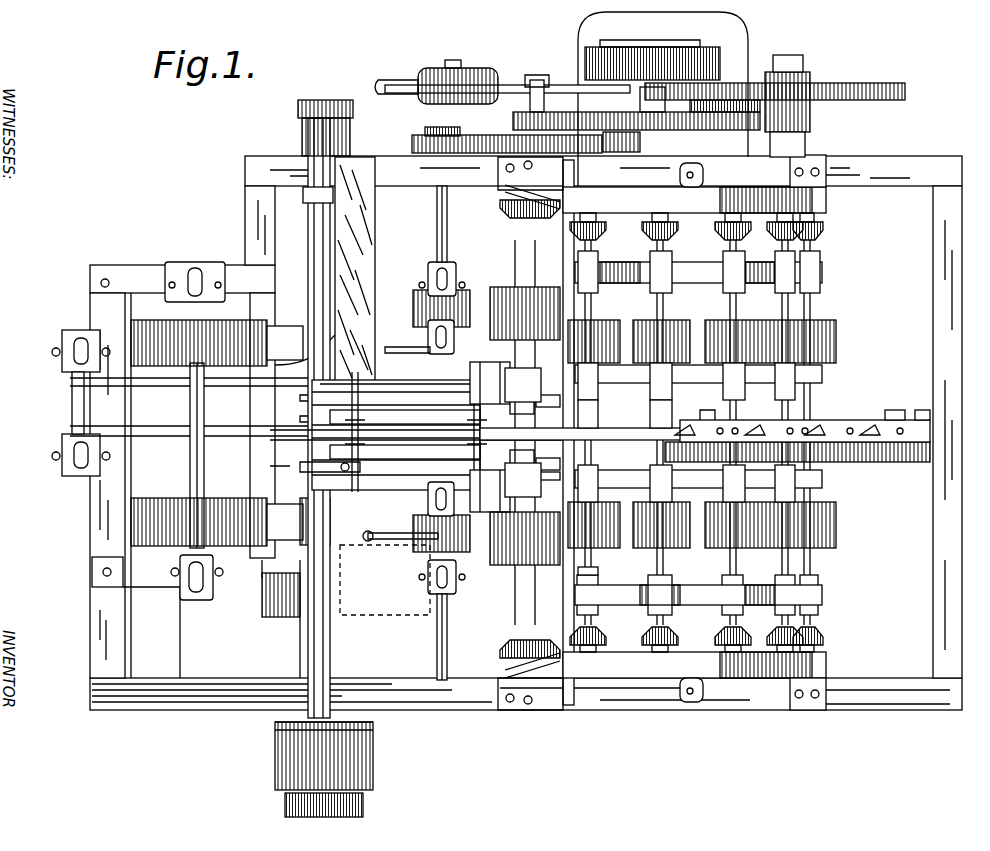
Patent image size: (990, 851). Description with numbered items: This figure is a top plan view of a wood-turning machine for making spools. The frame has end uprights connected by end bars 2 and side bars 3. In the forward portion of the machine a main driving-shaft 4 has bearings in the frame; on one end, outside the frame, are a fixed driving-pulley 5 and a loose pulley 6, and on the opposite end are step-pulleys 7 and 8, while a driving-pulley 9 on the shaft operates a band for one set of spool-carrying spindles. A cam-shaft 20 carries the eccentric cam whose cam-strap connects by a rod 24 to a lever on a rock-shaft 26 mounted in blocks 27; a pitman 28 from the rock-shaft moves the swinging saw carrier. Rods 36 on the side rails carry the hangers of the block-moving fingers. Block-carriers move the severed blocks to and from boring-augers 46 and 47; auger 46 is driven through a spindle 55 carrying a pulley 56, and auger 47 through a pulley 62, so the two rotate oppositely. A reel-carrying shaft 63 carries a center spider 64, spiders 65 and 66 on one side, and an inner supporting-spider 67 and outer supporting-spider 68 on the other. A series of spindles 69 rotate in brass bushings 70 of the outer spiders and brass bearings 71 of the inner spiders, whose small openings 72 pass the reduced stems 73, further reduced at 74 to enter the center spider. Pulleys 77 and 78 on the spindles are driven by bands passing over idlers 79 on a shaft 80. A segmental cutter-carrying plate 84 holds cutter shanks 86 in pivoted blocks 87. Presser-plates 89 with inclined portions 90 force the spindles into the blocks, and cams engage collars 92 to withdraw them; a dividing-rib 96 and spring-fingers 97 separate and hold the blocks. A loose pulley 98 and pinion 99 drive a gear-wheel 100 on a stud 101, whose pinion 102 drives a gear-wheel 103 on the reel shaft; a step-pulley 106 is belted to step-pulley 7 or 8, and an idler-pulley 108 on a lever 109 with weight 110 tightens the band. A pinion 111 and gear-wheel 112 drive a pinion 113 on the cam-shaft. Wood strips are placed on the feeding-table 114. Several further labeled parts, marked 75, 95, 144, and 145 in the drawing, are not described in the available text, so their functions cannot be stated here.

The end bars 2 is at (935, 598).
The side bars 3 is at (880, 170).
The main driving-shaft 4 is at (325, 268).
The fixed driving-pulley 5 is at (375, 752).
The loose pulley 6 is at (333, 805).
The step-pulley 7 is at (297, 133).
The step-pulley 8 is at (295, 108).
The driving-pulley 9 is at (305, 350).
The cam-shaft 20 is at (438, 230).
The rod 24 is at (285, 401).
The rock-shaft 26 is at (72, 405).
The blocks 27 is at (70, 325).
The pitman 28 is at (281, 418).
The rods 36 is at (518, 432).
The boring-auger 46 is at (490, 383).
The boring-auger 47 is at (490, 491).
The spindle 55 is at (447, 260).
The pulley 56 is at (430, 421).
The pulley 62 is at (437, 580).
The reel-carrying shaft 63 is at (690, 572).
The center spider 64 is at (613, 428).
The spider 65 is at (628, 460).
The spider 66 is at (625, 586).
The inner supporting-spider 67 is at (690, 368).
The outer supporting-spider 68 is at (692, 266).
The spool or block engaging spindles 69 is at (596, 566).
The brass bushings 70 is at (308, 521).
The brass bearings 71 is at (268, 592).
The small openings 72 is at (272, 618).
The reduced stems 73 is at (275, 432).
The reduced ends 74 is at (280, 406).
The gear 75 is at (548, 468).
The pulley 77 is at (822, 278).
The pulleys 78 is at (836, 350).
The idlers 79 is at (217, 433).
The shaft 80 is at (188, 403).
The cutter-carrying plate 84 is at (860, 462).
The shanks 86 is at (858, 420).
The blocks 87 is at (898, 405).
The presser-plates 89 is at (830, 203).
The inclined portions 90 is at (510, 183).
The collars 92 is at (822, 630).
The lever 95 is at (308, 456).
The dividing-rib 96 is at (532, 432).
The spring-fingers 97 is at (548, 432).
The loose pulley 98 is at (652, 79).
The pinion 99 is at (598, 92).
The gear-wheel 100 is at (890, 100).
The stud 101 is at (803, 62).
The pinion 102 is at (810, 125).
The gear-wheel 103 is at (725, 126).
The step-pulley 106 is at (621, 144).
The idler-pulley 108 is at (580, 62).
The lever 109 is at (530, 78).
The weight 110 is at (468, 71).
The pinion 111 is at (514, 120).
The gear-wheel 112 is at (445, 127).
The pinion 113 is at (408, 140).
The feeding-table 114 is at (355, 269).
The shaft 144 is at (420, 432).
The shaft 145 is at (396, 435).